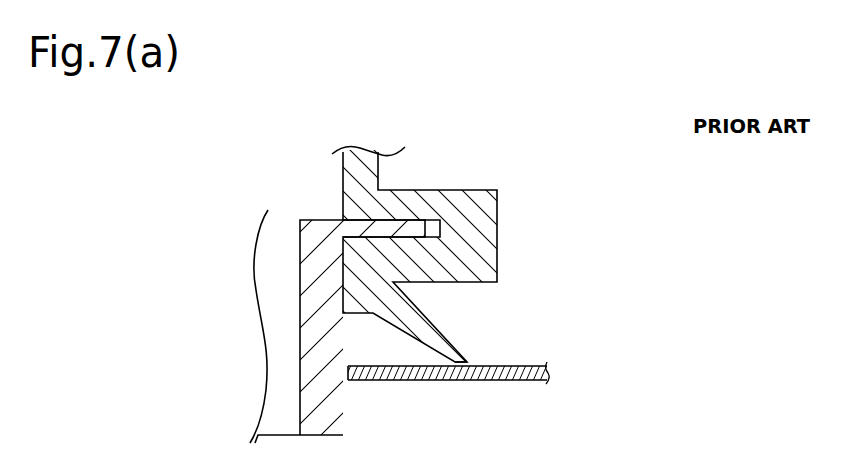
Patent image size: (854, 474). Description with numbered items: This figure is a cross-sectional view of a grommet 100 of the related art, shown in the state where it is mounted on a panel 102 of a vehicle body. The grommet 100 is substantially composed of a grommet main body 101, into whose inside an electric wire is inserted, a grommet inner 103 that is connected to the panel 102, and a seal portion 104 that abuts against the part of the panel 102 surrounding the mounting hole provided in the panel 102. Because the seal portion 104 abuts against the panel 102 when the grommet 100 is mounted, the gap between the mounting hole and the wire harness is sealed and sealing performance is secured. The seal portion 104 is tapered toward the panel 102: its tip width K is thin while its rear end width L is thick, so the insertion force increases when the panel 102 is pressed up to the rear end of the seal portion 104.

The grommet 100 is at (422, 110).
The grommet main body 101 is at (463, 190).
The panel 102 is at (425, 381).
The grommet inner 103 is at (308, 218).
The seal portion 104 is at (468, 357).
The tip width of the seal portion K is at (448, 338).
The rear end width of the seal portion L is at (382, 315).